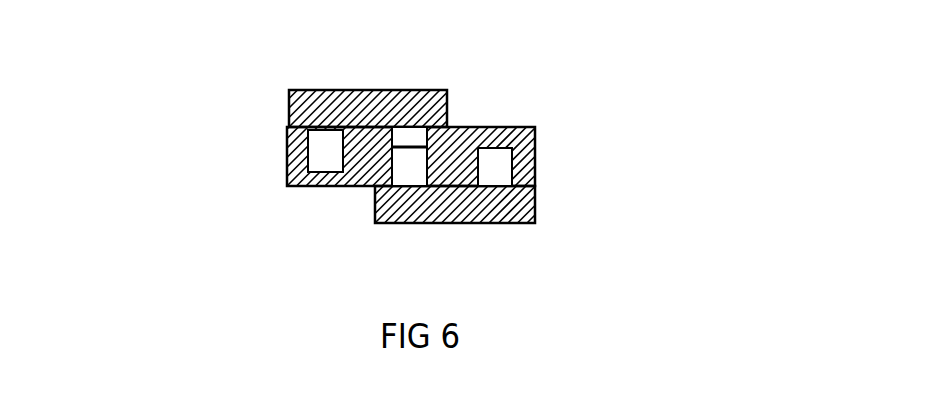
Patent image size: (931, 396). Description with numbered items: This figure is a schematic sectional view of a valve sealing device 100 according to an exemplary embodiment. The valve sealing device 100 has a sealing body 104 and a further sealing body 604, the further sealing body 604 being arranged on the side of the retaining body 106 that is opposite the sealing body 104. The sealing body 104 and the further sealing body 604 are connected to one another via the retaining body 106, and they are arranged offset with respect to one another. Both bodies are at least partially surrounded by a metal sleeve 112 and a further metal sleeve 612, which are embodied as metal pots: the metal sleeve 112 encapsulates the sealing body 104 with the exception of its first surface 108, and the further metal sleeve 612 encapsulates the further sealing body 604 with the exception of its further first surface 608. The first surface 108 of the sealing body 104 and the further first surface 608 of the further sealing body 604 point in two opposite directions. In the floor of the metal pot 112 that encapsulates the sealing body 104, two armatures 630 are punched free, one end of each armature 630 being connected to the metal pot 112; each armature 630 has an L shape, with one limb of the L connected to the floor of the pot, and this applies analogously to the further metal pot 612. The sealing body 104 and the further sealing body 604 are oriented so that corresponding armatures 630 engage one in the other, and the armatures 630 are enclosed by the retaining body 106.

The valve sealing device 100 is at (180, 75).
The sealing body 104 is at (307, 112).
The retaining body 106 is at (300, 152).
The first surface 108 is at (412, 85).
The metal sleeve 112 is at (305, 112).
The further sealing body 604 is at (405, 203).
The further first surface 608 is at (453, 223).
The further metal sleeve 612 is at (535, 207).
The armature 630 is at (418, 137).